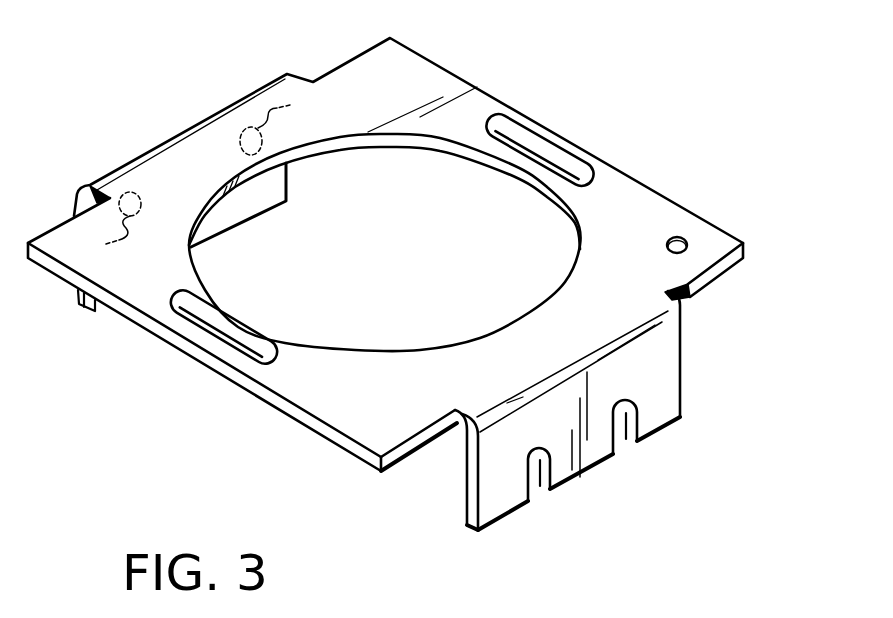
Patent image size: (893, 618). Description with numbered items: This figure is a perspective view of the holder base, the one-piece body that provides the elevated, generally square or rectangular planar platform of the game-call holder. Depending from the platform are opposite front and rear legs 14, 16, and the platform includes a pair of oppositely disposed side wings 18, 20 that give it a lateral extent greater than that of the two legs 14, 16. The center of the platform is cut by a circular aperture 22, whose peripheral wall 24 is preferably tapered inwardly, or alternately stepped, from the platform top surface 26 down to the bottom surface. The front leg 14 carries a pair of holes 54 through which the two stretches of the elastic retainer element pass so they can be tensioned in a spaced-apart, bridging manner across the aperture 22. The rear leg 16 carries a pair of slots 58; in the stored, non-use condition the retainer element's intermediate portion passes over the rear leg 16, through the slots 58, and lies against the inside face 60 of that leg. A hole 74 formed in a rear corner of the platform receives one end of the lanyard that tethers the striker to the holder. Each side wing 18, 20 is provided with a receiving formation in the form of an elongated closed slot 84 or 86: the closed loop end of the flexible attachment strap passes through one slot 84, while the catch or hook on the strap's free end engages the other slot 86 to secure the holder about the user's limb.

The front leg 14 is at (290, 180).
The rear leg 16 is at (684, 340).
The side wing 18 is at (407, 65).
The side wing 20 is at (148, 294).
The aperture 22 is at (385, 242).
The peripheral wall 24 is at (356, 138).
The platform top surface 26 is at (612, 298).
The holes 54 is at (197, 200).
The slots 58 is at (618, 410).
The inside face 60 is at (467, 482).
The hole 74 is at (687, 234).
The elongated closed slot 84 is at (240, 334).
The elongated closed slot 86 is at (583, 152).